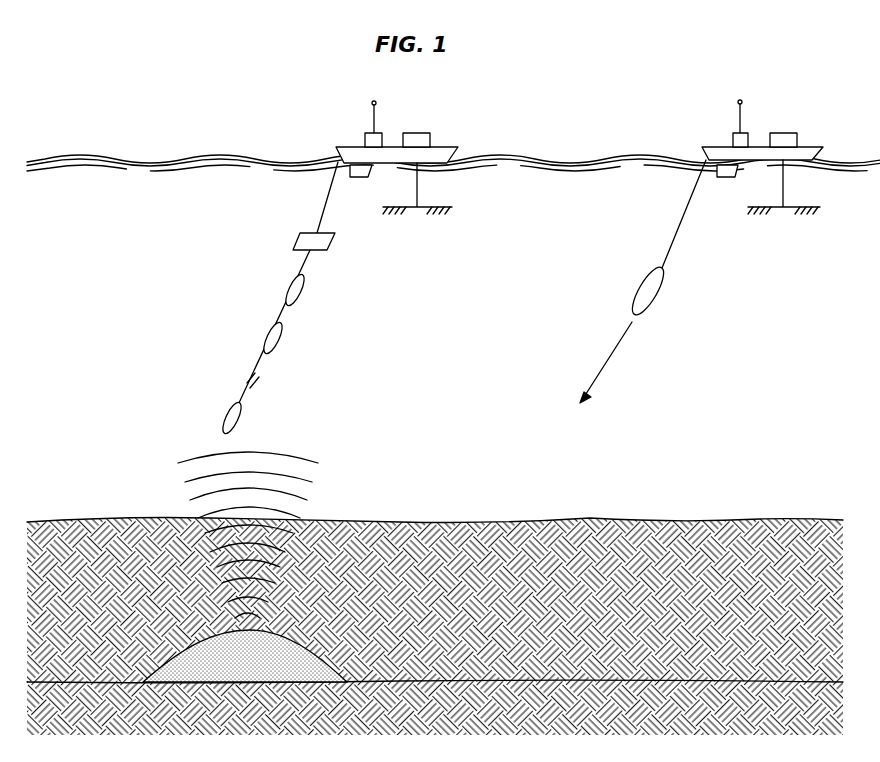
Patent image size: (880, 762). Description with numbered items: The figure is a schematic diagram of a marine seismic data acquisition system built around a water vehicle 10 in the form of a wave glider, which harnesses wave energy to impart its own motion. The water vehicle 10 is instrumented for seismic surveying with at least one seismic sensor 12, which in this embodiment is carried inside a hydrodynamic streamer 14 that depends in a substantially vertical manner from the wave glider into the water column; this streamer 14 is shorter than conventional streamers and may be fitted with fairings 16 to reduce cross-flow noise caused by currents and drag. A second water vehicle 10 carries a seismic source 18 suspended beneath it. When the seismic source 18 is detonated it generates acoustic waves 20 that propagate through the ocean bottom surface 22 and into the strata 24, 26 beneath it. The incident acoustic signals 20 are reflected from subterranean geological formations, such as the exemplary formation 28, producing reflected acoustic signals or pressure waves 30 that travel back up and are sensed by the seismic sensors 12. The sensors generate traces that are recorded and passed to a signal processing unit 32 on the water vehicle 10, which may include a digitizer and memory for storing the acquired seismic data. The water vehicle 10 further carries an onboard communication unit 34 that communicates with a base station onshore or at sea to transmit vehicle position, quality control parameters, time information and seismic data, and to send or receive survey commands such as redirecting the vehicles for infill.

The water vehicle 10 is at (447, 146).
The seismic sensor 12 is at (290, 283).
The streamer 14 is at (308, 265).
The fairing 16 is at (297, 242).
The seismic source 18 is at (643, 287).
The acoustic waves 20 is at (610, 357).
The ocean bottom surface 22 is at (602, 518).
The stratum 24 is at (386, 666).
The stratum 26 is at (416, 720).
The subterranean geological formation 28 is at (258, 668).
The reflected acoustic signals 30 is at (305, 440).
The signal processing unit 32 is at (417, 132).
The onboard communication unit 34 is at (372, 122).